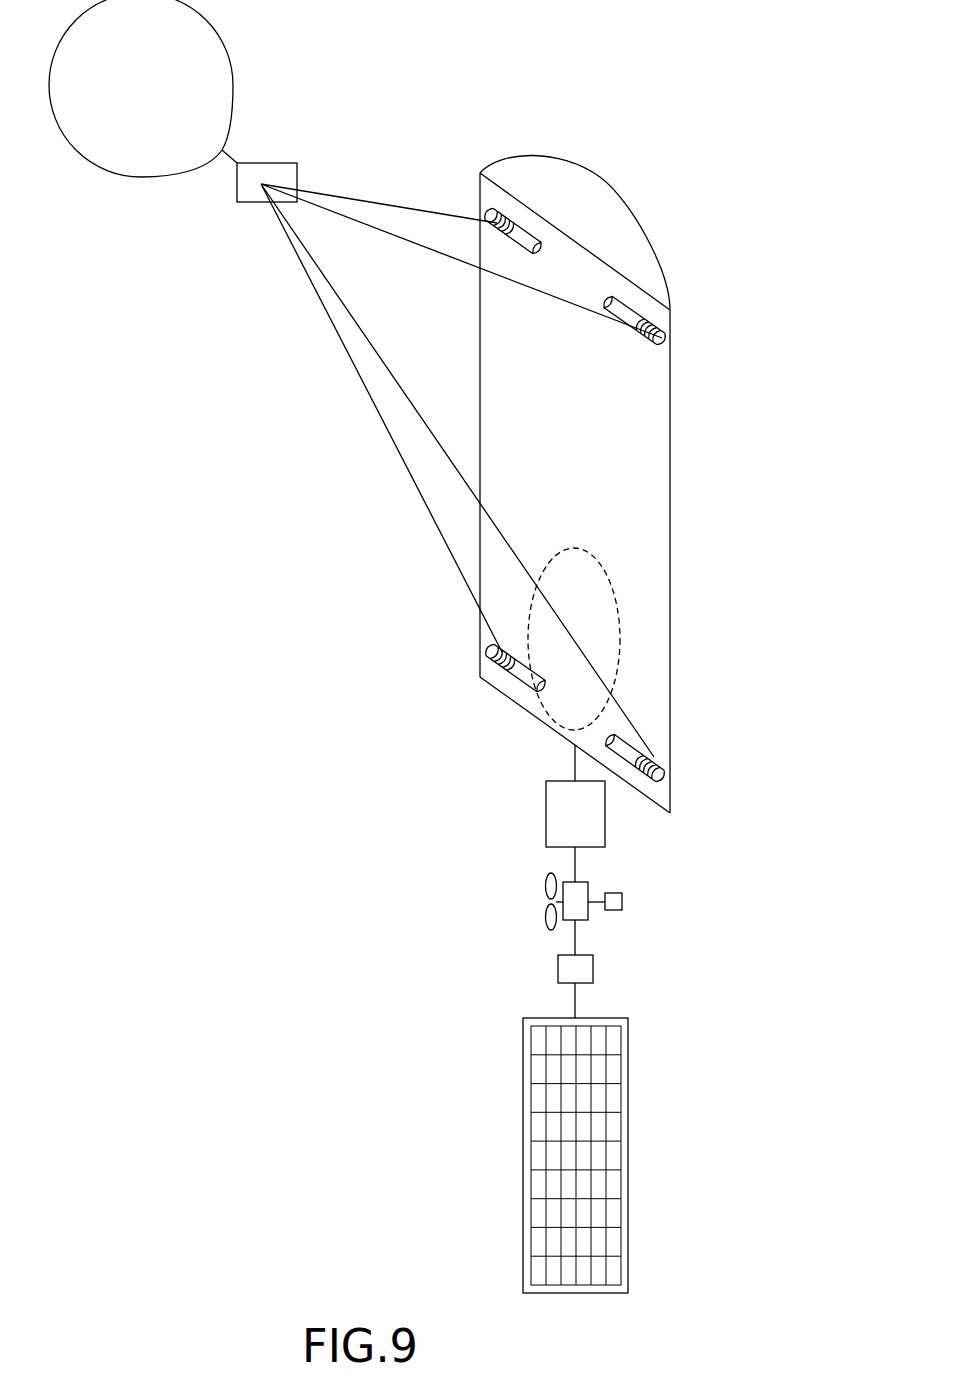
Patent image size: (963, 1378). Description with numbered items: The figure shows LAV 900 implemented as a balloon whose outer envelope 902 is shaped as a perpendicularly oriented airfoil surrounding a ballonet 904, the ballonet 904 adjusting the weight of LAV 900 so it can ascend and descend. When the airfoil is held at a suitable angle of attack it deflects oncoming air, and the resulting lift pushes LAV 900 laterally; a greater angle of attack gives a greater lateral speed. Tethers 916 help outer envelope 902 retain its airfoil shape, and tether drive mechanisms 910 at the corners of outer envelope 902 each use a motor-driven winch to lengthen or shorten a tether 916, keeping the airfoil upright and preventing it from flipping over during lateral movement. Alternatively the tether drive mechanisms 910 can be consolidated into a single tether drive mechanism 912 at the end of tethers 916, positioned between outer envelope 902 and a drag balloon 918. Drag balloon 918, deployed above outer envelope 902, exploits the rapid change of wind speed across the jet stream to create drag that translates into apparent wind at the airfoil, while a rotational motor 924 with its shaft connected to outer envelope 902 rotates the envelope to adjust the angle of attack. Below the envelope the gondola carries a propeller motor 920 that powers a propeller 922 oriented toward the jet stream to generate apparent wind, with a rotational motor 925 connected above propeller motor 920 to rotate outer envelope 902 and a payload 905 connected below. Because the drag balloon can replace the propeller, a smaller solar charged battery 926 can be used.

The LAV 900 is at (748, 180).
The outer envelope 902 is at (630, 243).
The ballonet 904 is at (605, 617).
The payload 905 is at (560, 968).
The tether drive mechanism 910 is at (500, 207).
The single tether drive mechanism 912 is at (257, 203).
The tether 916 is at (387, 203).
The drag balloon 918 is at (187, 77).
The propeller motor 920 is at (578, 892).
The propeller 922 is at (538, 883).
The rotational motor 924 is at (618, 903).
The rotational motor 925 is at (555, 810).
The solar charged battery 926 is at (537, 1168).